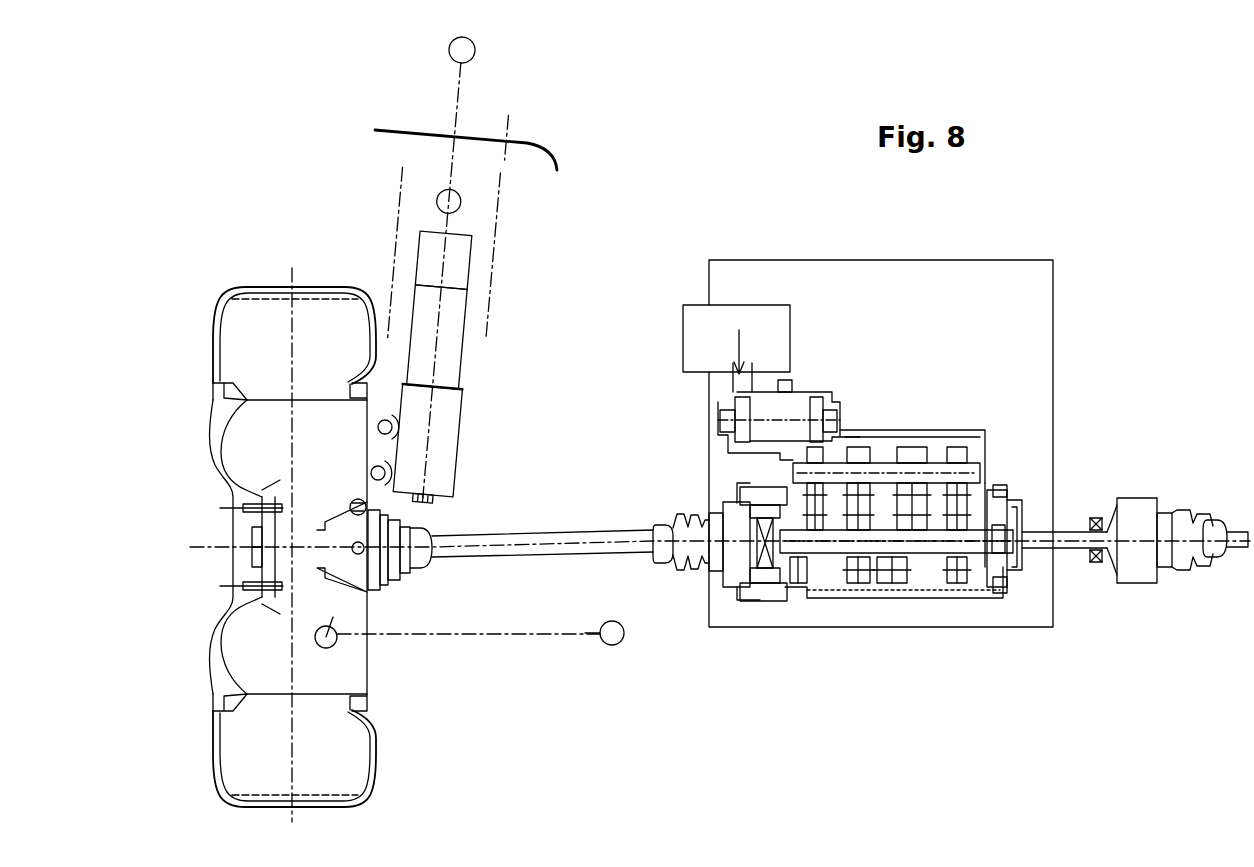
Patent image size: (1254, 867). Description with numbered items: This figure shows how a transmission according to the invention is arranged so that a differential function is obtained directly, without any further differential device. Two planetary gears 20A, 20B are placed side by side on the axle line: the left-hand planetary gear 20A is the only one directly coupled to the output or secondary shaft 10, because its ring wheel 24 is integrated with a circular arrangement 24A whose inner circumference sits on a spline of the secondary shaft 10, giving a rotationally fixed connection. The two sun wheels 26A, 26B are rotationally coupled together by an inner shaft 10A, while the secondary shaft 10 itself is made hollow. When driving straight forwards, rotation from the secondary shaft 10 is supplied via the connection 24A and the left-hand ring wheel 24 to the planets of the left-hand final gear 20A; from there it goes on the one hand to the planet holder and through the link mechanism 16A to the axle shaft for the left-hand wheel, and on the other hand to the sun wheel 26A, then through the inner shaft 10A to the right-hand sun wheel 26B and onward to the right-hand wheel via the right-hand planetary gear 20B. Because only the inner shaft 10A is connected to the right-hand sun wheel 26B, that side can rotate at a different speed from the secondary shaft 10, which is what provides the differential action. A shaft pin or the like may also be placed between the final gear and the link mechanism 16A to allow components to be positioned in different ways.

The secondary shaft 10 is at (935, 572).
The inner shaft 10A is at (885, 562).
The link mechanism 16A is at (677, 573).
The left-hand planetary gear 20A is at (730, 518).
The right-hand planetary gear 20B is at (1020, 512).
The ring wheel 24 is at (764, 580).
The circular arrangement 24A is at (790, 581).
The sun wheel 26A is at (742, 573).
The sun wheel 26B is at (1006, 546).